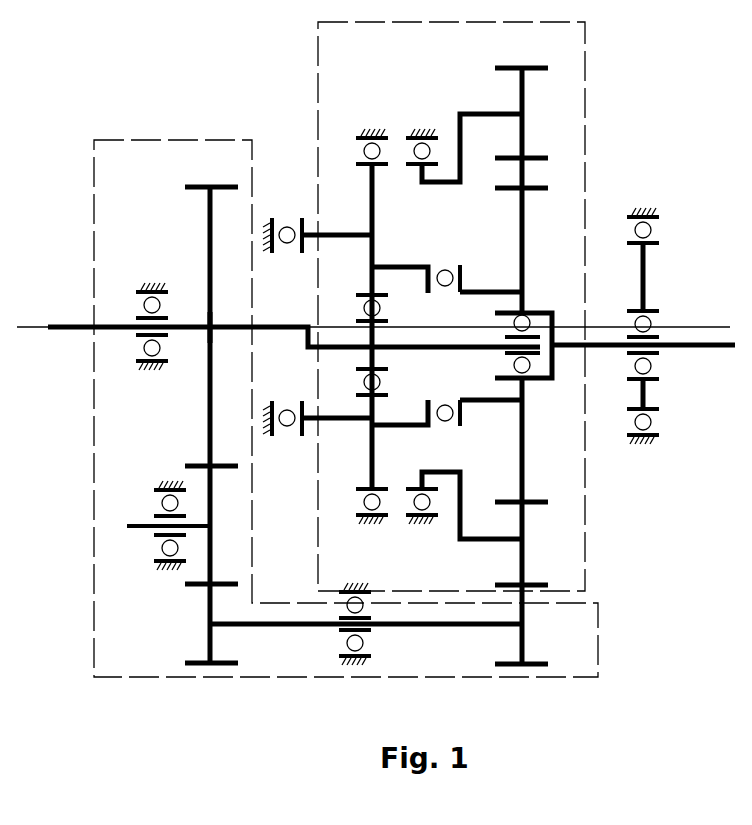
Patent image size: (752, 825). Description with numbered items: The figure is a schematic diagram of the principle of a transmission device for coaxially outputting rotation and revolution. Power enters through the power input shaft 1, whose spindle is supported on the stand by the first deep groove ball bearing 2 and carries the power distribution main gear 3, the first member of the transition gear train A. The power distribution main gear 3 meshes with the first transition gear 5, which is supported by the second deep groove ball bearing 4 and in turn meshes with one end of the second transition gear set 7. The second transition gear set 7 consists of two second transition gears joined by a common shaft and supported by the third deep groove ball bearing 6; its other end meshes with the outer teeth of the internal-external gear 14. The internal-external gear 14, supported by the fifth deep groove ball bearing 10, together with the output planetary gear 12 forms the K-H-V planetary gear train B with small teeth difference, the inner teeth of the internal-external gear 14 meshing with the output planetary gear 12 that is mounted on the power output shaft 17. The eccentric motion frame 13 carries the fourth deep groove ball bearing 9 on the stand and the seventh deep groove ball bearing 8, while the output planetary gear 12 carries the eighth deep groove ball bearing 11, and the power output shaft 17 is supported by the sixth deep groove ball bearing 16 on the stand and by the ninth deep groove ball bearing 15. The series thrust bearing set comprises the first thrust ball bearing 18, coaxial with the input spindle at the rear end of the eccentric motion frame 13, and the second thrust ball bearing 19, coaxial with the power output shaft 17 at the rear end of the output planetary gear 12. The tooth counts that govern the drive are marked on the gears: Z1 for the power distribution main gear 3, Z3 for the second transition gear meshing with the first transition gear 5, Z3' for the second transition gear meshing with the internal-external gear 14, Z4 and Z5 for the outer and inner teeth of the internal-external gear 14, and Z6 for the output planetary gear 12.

The power input shaft 1 is at (72, 325).
The first deep groove ball bearing 2 is at (145, 291).
The power distribution main gear 3 is at (198, 185).
The second deep groove ball bearing 4 is at (165, 489).
The first transition gear 5 is at (212, 500).
The third deep groove ball bearing 6 is at (363, 592).
The second transition gear set 7 is at (378, 627).
The seventh deep groove ball bearing 8 is at (377, 310).
The fourth deep groove ball bearing 9 is at (368, 130).
The fifth deep groove ball bearing 10 is at (418, 132).
The eighth deep groove ball bearing 11 is at (512, 333).
The output planetary gear 12 is at (522, 258).
The eccentric motion frame 13 is at (370, 213).
The internal-external gear 14 is at (500, 112).
The ninth deep groove ball bearing 15 is at (645, 325).
The sixth deep groove ball bearing 16 is at (655, 225).
The power output shaft 17 is at (670, 348).
The first thrust ball bearing 18 is at (287, 225).
The second thrust ball bearing 19 is at (445, 421).
The number of teeth of the power distribution main gear Z1 is at (208, 345).
The number of teeth of the second transition gear meshing with the first transition Z3 is at (190, 647).
The number of teeth of the second transition gear meshing with the internal-external Z3' is at (544, 645).
The number of outer teeth of the internal-external gear Z4 is at (525, 65).
The number of inner teeth of the internal-external gear Z5 is at (525, 160).
The number of teeth of the output planetary gear Z6 is at (517, 192).
The transition gear train A is at (598, 677).
The K-H-V planetary gear train with small teeth difference B is at (585, 52).